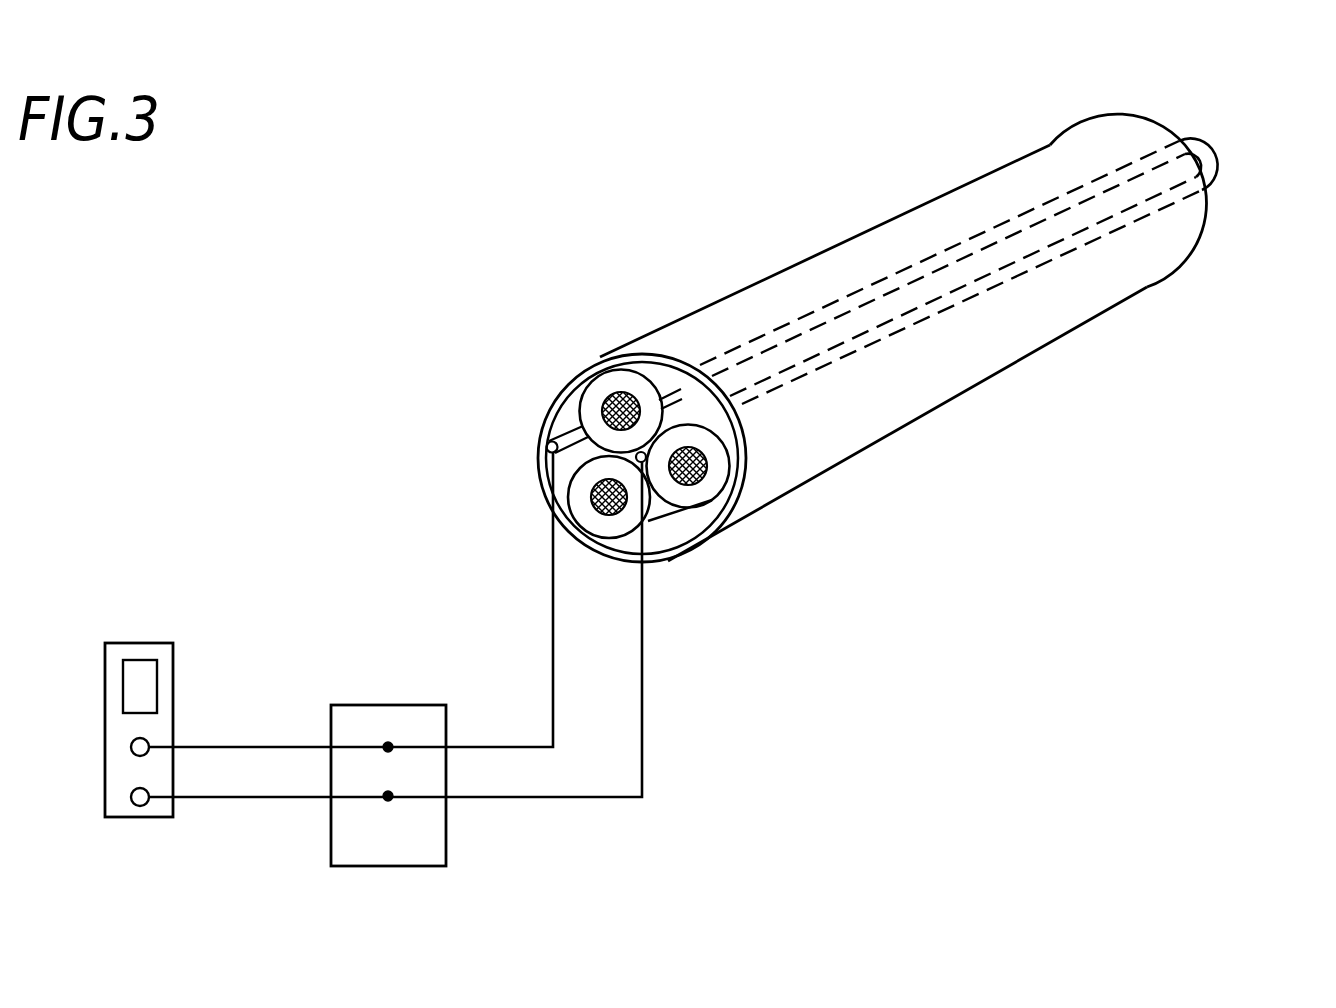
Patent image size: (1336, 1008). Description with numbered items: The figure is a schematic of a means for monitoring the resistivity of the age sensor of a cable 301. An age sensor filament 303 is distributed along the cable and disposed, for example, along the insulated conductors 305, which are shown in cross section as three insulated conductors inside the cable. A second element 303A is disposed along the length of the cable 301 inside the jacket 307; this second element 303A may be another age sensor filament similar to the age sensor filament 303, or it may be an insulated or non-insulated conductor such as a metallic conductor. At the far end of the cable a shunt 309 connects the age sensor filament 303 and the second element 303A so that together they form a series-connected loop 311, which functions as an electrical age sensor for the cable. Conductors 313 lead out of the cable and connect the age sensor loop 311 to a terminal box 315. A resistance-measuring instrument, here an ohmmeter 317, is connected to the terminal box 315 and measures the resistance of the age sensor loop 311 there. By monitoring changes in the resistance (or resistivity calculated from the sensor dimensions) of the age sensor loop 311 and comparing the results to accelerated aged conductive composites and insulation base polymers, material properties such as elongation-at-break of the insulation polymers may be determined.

The cable 301 is at (825, 250).
The age sensor filament 303 is at (1022, 278).
The second element 303A is at (977, 233).
The insulated conductors 305 is at (572, 403).
The jacket 307 is at (663, 356).
The shunt 309 is at (1200, 140).
The series-connected loop 311 is at (1113, 227).
The conductors 313 is at (553, 682).
The terminal box 315 is at (400, 705).
The ohmmeter 317 is at (137, 643).